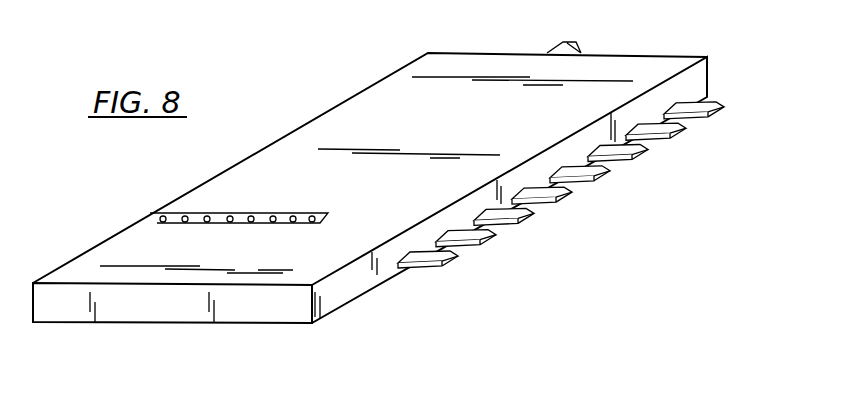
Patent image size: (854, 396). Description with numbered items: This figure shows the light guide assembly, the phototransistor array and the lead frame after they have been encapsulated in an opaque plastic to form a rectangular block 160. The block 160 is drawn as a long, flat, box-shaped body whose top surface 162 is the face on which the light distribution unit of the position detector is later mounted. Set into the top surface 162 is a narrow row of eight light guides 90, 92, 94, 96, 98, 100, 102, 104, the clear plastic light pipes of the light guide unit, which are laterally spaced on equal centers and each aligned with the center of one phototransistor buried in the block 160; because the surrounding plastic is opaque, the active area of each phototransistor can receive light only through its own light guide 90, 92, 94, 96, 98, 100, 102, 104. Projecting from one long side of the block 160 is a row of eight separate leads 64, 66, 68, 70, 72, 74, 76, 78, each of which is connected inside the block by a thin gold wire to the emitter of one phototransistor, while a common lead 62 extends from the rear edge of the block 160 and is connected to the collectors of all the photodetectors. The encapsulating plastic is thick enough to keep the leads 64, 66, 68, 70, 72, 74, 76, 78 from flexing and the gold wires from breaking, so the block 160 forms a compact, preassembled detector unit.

The common lead 62 is at (578, 43).
The lead 64 is at (716, 112).
The lead 66 is at (678, 134).
The lead 68 is at (640, 156).
The lead 70 is at (602, 177).
The lead 72 is at (564, 198).
The lead 74 is at (526, 220).
The lead 76 is at (488, 241).
The lead 78 is at (450, 262).
The light guide 90 is at (162, 223).
The light guide 92 is at (188, 215).
The light guide 94 is at (206, 223).
The light guide 96 is at (232, 215).
The light guide 98 is at (250, 223).
The light guide 100 is at (275, 215).
The light guide 102 is at (292, 223).
The light guide 104 is at (326, 213).
The rectangular block 160 is at (662, 55).
The top surface 162 is at (375, 103).